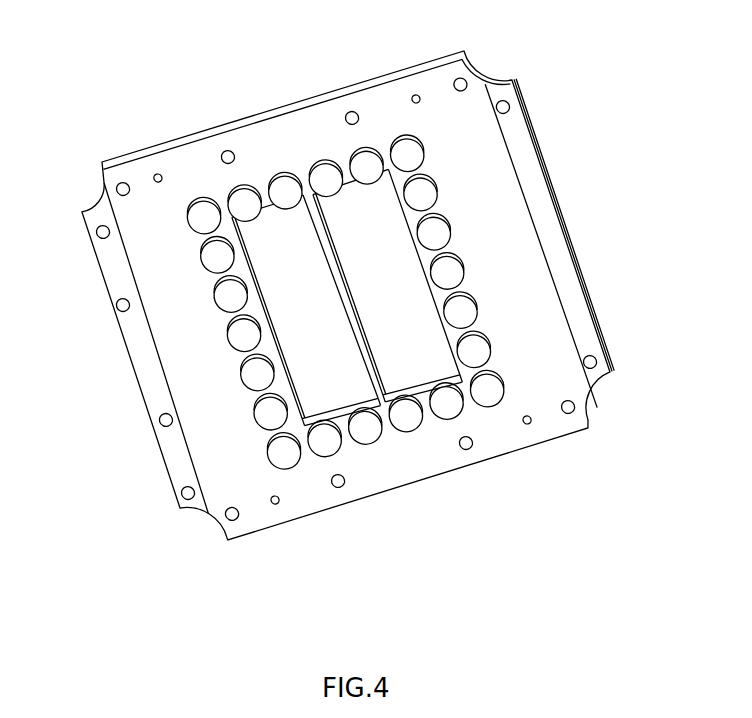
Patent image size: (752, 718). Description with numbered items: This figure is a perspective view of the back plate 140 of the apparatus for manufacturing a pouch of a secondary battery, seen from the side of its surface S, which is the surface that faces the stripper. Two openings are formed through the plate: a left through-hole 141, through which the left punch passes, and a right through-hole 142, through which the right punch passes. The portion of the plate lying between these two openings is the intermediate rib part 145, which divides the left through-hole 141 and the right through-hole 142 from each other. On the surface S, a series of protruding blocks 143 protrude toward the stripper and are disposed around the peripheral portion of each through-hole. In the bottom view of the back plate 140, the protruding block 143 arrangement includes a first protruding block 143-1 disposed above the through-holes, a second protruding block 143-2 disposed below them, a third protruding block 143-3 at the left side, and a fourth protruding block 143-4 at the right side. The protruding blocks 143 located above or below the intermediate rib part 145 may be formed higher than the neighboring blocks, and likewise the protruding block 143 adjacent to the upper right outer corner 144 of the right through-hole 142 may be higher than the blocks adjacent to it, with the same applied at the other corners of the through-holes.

The back plate 140 is at (134, 70).
The left through-hole 141 is at (317, 324).
The right through-hole 142 is at (458, 284).
The protruding block 143 is at (320, 146).
The first protruding block 143-1 is at (246, 206).
The second protruding block 143-2 is at (410, 425).
The third protruding block 143-3 is at (216, 265).
The fourth protruding block 143-4 is at (468, 313).
The upper right outer corner 144 is at (419, 154).
The intermediate rib part 145 is at (356, 324).
The surface S is at (467, 160).